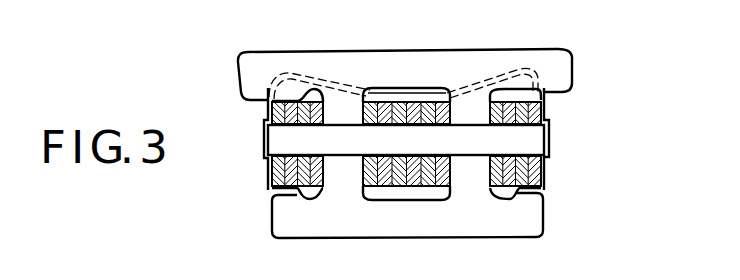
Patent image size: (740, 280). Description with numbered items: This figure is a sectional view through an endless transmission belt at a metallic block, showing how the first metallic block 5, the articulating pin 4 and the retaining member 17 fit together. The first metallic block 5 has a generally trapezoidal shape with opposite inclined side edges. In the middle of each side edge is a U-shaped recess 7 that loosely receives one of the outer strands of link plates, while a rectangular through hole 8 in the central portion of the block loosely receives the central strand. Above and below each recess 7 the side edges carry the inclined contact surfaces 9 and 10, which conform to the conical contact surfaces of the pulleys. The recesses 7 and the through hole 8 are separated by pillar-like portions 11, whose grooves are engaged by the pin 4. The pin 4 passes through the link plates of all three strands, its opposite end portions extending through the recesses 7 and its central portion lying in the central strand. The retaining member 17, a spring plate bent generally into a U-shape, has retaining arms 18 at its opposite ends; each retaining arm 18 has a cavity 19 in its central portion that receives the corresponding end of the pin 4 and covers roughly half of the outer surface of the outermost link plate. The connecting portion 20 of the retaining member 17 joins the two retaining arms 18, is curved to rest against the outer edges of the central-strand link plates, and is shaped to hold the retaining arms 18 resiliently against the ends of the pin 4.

The pin 4 is at (522, 141).
The first metallic block 5 is at (466, 47).
The recess 7 is at (312, 201).
The through hole 8 is at (415, 197).
The inclined contact surface 9 is at (238, 78).
The inclined contact surface 10 is at (271, 220).
The pillar-like portion 11 is at (373, 178).
The retaining member 17 is at (269, 188).
The retaining arm 18 is at (267, 191).
The cavity 19 is at (265, 142).
The connecting portion 20 is at (410, 88).